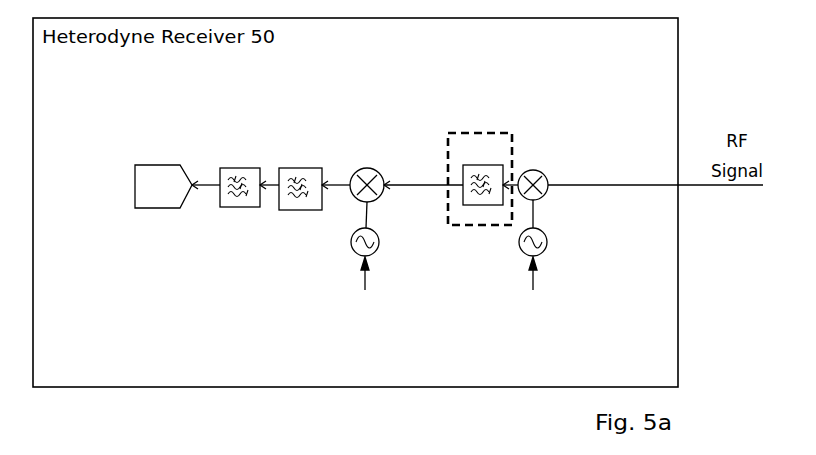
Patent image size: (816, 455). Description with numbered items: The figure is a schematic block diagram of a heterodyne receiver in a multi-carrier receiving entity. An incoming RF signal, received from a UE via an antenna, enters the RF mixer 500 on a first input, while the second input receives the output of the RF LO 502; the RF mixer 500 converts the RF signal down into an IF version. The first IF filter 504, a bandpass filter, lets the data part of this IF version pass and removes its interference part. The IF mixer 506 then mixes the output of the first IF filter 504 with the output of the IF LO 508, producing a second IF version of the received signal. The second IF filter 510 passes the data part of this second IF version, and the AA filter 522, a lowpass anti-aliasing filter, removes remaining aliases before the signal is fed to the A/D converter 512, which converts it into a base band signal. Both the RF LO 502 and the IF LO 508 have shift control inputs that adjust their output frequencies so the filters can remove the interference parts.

The RF mixer 500 is at (541, 171).
The RF LO 502 is at (522, 226).
The first IF filter 504 is at (505, 133).
The IF mixer 506 is at (375, 168).
The IF LO 508 is at (379, 238).
The second IF filter 510 is at (302, 210).
The A/D converter 512 is at (143, 165).
The AA filter 522 is at (235, 207).